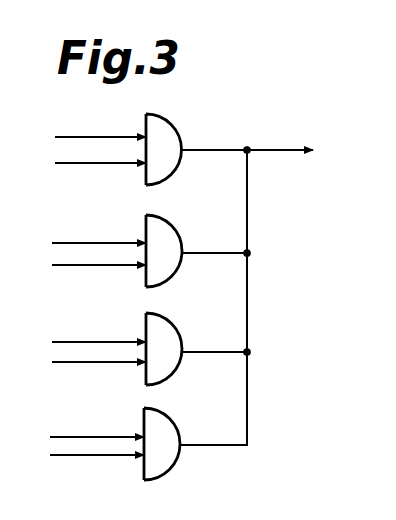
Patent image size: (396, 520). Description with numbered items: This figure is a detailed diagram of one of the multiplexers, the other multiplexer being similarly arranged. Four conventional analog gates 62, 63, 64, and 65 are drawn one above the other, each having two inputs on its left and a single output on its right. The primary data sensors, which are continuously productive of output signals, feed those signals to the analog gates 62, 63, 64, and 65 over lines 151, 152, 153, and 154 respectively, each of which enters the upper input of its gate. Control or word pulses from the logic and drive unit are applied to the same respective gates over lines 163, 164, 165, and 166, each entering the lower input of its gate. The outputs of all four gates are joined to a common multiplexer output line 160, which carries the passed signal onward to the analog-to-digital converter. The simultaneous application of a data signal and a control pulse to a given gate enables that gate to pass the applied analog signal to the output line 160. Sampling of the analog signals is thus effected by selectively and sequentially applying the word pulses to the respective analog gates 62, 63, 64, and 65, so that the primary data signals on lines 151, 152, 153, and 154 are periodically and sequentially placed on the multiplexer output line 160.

The analog gate 62 is at (168, 130).
The analog gate 63 is at (167, 232).
The analog gate 64 is at (167, 333).
The analog gate 65 is at (163, 422).
The line 151 is at (100, 133).
The line 152 is at (100, 241).
The line 153 is at (108, 340).
The line 154 is at (95, 435).
The line 163 is at (88, 165).
The line 164 is at (90, 267).
The line 165 is at (95, 364).
The line 166 is at (110, 458).
The multiplexer output line 160 is at (255, 153).